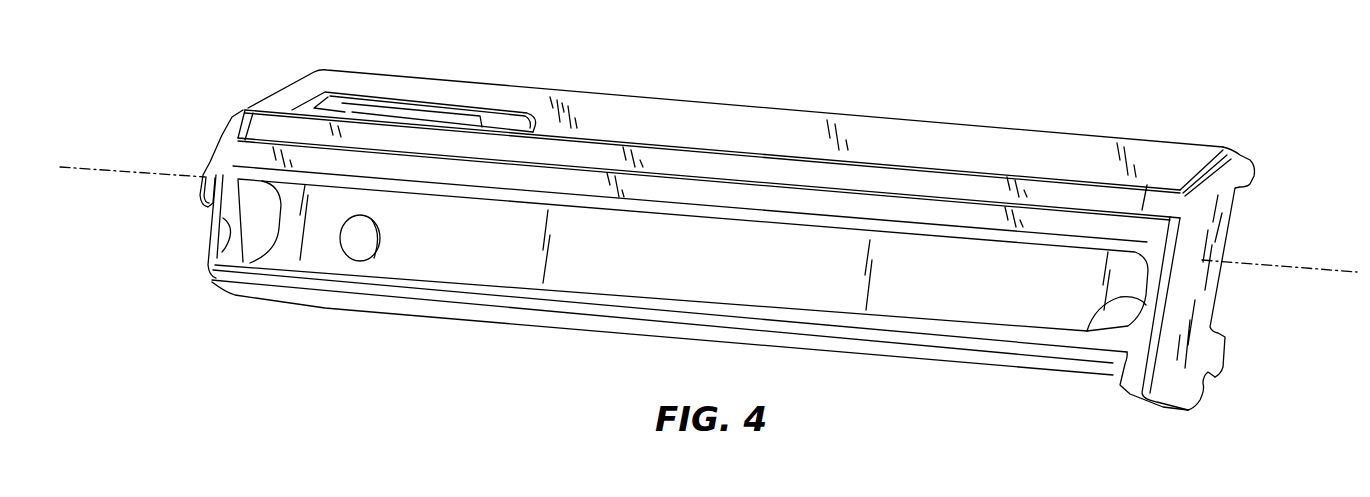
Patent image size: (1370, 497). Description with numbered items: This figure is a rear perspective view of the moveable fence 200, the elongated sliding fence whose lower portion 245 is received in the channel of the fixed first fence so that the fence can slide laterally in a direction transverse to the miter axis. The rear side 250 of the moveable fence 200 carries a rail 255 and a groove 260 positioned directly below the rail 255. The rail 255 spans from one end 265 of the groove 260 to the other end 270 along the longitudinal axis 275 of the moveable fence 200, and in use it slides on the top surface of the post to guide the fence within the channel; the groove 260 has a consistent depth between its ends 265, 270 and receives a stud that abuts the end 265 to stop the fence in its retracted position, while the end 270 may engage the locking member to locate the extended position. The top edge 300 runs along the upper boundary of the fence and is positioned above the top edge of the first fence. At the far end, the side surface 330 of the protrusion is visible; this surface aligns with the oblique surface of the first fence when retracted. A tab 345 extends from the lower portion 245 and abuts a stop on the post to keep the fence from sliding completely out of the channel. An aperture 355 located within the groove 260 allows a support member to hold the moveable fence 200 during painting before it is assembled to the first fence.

The moveable fence 200 is at (958, 86).
The lower portion 245 is at (1280, 373).
The rear side 250 is at (896, 375).
The rail 255 is at (1062, 193).
The groove 260 is at (687, 269).
The end of the groove 265 is at (222, 240).
The another end of the groove 270 is at (1143, 297).
The longitudinal axis 275 is at (1265, 262).
The top edge 300 is at (655, 98).
The side surface 330 is at (283, 92).
The tab 345 is at (1157, 408).
The aperture 355 is at (380, 253).